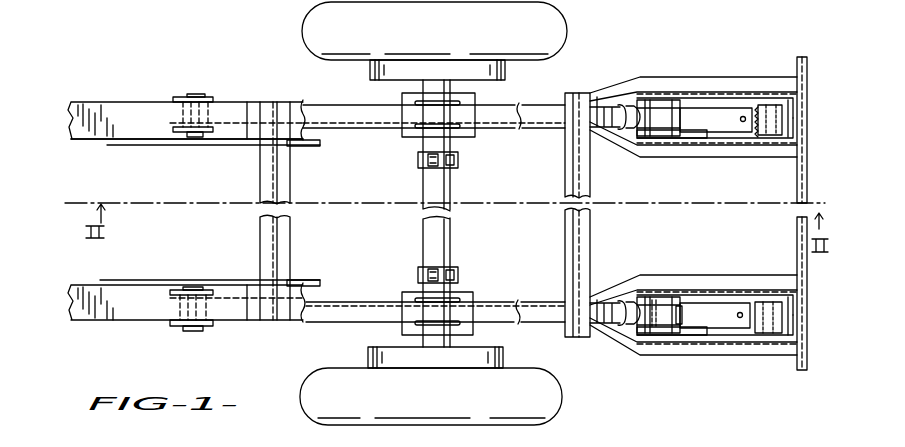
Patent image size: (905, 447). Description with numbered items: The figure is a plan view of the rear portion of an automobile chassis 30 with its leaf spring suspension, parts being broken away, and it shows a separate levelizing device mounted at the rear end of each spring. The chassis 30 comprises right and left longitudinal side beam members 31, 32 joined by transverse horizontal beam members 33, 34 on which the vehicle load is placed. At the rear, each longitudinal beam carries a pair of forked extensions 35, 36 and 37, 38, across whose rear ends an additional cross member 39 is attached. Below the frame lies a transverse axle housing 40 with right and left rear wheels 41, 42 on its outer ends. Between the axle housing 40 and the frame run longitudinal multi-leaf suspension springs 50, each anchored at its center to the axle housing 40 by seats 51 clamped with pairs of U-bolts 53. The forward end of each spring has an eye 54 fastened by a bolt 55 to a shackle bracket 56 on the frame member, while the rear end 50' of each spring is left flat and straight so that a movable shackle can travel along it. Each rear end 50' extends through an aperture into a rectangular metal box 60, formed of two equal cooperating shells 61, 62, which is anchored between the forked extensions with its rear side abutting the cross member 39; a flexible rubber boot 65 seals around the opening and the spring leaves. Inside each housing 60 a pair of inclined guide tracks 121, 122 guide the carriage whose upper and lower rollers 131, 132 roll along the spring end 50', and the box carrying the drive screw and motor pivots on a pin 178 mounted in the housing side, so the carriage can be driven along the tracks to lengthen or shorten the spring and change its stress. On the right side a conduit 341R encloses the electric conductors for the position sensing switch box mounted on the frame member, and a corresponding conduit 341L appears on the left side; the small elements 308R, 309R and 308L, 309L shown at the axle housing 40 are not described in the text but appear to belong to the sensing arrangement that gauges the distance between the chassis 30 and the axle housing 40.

The automobile chassis 30 is at (140, 95).
The right longitudinal side beam member 31 is at (128, 143).
The left longitudinal side beam member 32 is at (135, 268).
The horizontal beam member 33 is at (279, 224).
The horizontal beam member 34 is at (585, 190).
The extension 35 is at (660, 77).
The extension 36 is at (744, 157).
The extension 37 is at (674, 276).
The extension 38 is at (679, 356).
The additional cross member 39 is at (807, 206).
The axle housing 40 is at (451, 221).
The right rear wheel 41 is at (567, 25).
The left rear wheel 42 is at (343, 360).
The longitudinal multi-leaf suspension spring 50 is at (434, 213).
The rear end of leaf spring assembly 50' is at (729, 177).
The seat 51 is at (477, 125).
The U-bolt 53 is at (460, 126).
The eye 54 is at (208, 133).
The bolt 55 is at (197, 95).
The shackle bracket 56 is at (190, 96).
The rectangular metal box 60 is at (763, 152).
The cooperating shell 61 is at (733, 97).
The cooperating shell 62 is at (713, 139).
The rubber boot 65 is at (621, 135).
The guide track 121 is at (663, 100).
The guide track 122 is at (697, 139).
The upper leaf spring engaging roller 131 is at (676, 317).
The lower leaf spring engaging roller 132 is at (653, 284).
The pin 178 is at (767, 105).
The right axle clamp 308R is at (418, 155).
The right clamp bolt 309R is at (458, 162).
The left axle clamp 308L is at (420, 268).
The left clamp bolt 309L is at (458, 271).
The conduit 341R is at (153, 145).
The left rail flange 341L is at (183, 257).